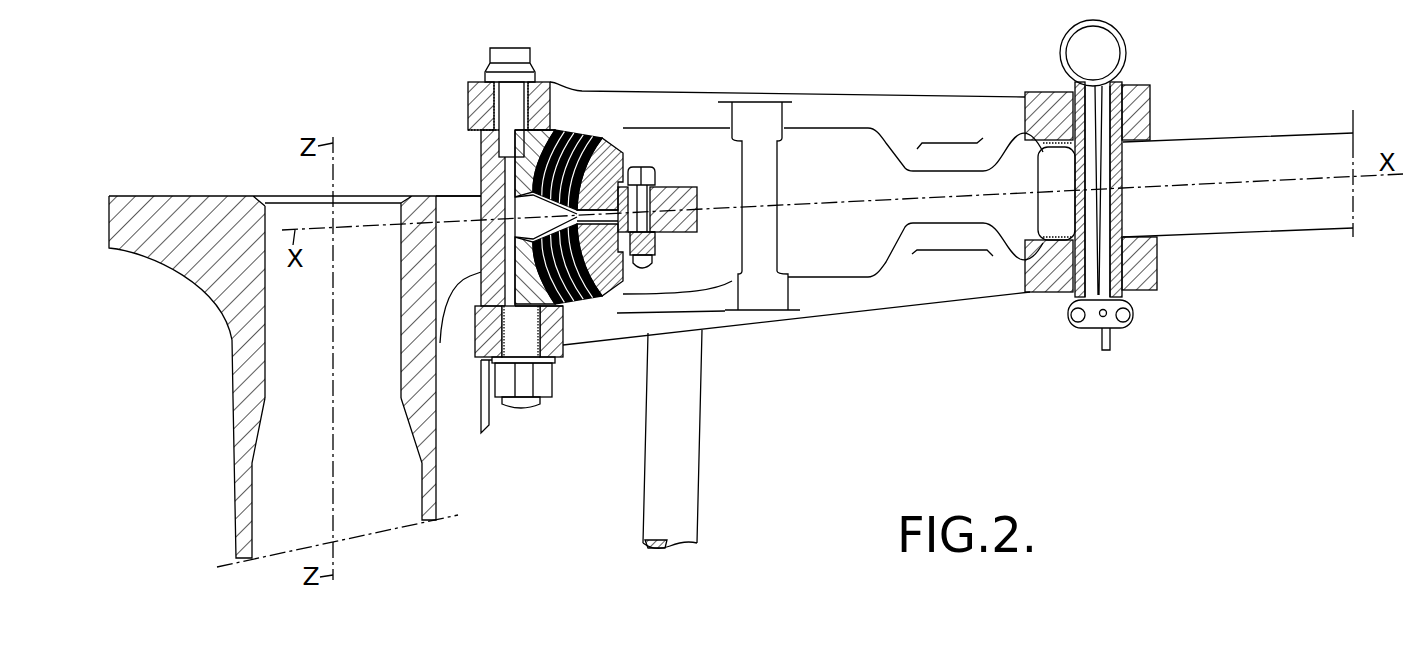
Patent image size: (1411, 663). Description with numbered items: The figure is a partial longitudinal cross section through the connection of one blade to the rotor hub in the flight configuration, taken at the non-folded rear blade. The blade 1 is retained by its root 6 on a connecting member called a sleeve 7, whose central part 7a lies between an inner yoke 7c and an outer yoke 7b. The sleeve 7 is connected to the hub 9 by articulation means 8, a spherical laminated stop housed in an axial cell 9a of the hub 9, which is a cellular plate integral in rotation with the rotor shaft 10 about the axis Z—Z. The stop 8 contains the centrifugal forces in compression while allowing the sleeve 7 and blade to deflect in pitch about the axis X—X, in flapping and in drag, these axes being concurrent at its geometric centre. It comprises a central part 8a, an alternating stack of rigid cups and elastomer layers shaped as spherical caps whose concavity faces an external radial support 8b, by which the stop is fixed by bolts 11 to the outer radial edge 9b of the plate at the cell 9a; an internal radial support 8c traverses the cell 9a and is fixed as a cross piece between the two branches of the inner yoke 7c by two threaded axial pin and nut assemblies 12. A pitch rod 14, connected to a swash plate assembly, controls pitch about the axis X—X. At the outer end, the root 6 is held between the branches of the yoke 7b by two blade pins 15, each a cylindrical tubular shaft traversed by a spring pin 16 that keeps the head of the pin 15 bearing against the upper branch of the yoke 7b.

The blade 1 is at (1297, 233).
The blade root 6 is at (1202, 168).
The sleeve 7 is at (820, 118).
The central part of sleeve 7a is at (853, 290).
The yoke 7b is at (1143, 110).
The yoke 7c is at (543, 83).
The articulation means 8 is at (603, 130).
The central part of spherical stop 8a is at (573, 137).
The external radial support 8b is at (612, 283).
The internal radial support 8c is at (487, 153).
The hub 9 is at (188, 193).
The axial cell 9a is at (465, 209).
The outer radial edge of the plate 9b is at (674, 192).
The rotor shaft 10 is at (240, 477).
The bolt 11 is at (647, 170).
The threaded axial pin and nut assembly 12 is at (523, 337).
The pitch rod 14 is at (663, 497).
The blade pin 15 is at (1123, 210).
The spring pin 16 is at (1060, 55).